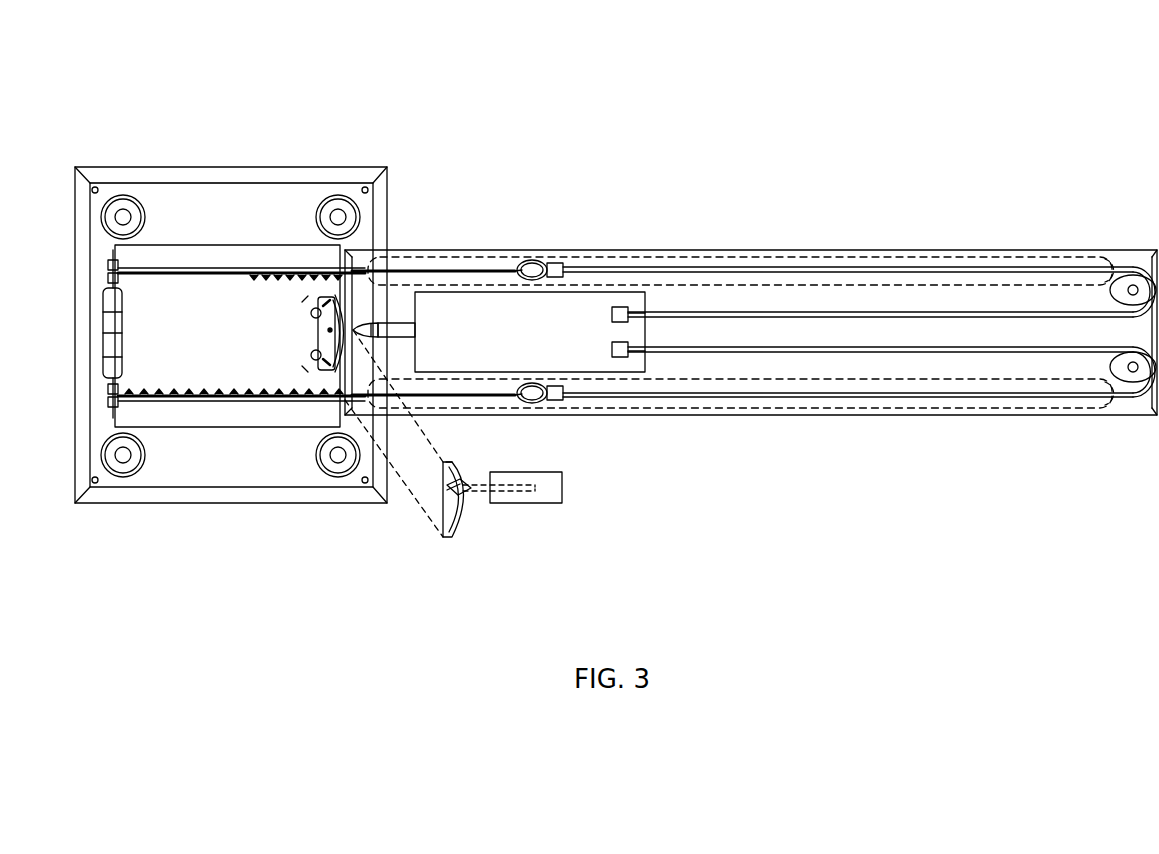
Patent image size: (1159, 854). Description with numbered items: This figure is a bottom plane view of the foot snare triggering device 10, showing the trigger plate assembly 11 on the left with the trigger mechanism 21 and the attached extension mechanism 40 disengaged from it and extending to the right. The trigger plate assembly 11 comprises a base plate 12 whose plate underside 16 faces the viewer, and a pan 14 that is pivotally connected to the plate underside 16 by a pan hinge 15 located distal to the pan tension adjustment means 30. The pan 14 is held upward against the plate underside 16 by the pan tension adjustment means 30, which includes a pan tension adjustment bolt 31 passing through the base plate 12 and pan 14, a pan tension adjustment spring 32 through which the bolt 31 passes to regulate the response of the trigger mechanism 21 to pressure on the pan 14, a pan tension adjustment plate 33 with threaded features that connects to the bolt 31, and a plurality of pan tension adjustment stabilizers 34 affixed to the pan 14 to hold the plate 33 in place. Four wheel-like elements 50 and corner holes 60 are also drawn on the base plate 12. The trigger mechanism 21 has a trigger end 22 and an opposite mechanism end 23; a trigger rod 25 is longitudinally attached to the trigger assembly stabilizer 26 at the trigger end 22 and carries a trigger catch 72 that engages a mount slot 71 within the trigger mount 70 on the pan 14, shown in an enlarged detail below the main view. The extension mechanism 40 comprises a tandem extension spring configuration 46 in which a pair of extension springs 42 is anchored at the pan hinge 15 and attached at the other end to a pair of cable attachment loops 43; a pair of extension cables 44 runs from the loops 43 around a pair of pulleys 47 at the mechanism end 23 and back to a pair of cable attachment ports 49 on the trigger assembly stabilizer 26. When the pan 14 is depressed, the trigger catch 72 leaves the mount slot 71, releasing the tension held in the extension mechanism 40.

The foot snare triggering device 10 is at (608, 83).
The trigger plate assembly 11 is at (123, 167).
The base plate 12 is at (182, 183).
The pan 14 is at (241, 427).
The pan hinge 15 is at (124, 333).
The plate underside 16 is at (243, 222).
The trigger mechanism 21 is at (572, 500).
The trigger end 22 is at (363, 322).
The mechanism end 23 is at (645, 330).
The trigger rod 25 is at (393, 323).
The trigger assembly stabilizer 26 is at (482, 338).
The pan tension adjustment means 30 is at (318, 321).
The pan tension adjustment bolt 31 is at (318, 333).
The pan tension adjustment spring 32 is at (305, 345).
The pan tension adjustment plate 33 is at (326, 302).
The pan tension adjustment stabilizers 34 is at (312, 301).
The extension mechanism 40 is at (700, 250).
The extension springs 42 is at (432, 268).
The cable attachment loops 43 is at (533, 262).
The extension cables 44 is at (890, 267).
The tandem extension spring configuration 46 is at (193, 282).
The pulleys 47 is at (1115, 290).
The cable attachment ports 49 is at (611, 315).
The wheel 50 is at (339, 195).
The mounting hole 60 is at (367, 187).
The trigger mount 70 is at (458, 463).
The mount slot 71 is at (447, 538).
The trigger catch 72 is at (374, 323).